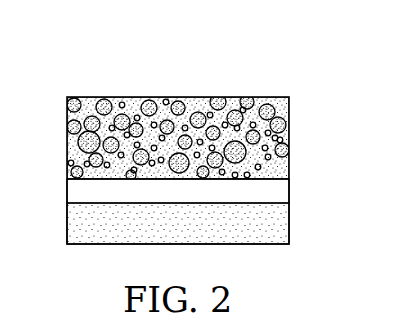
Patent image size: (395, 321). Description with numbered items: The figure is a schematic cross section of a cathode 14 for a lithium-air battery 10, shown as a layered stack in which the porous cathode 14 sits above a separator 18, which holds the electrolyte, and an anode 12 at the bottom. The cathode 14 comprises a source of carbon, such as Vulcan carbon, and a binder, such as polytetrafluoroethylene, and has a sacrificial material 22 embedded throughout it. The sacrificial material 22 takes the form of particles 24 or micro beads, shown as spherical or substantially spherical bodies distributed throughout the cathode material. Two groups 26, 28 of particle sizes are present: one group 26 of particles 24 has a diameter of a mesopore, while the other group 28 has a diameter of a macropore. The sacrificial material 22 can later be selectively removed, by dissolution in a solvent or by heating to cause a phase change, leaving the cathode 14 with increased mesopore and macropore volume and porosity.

The lithium-air battery 10 is at (87, 62).
The anode 12 is at (67, 221).
The cathode 14 is at (209, 115).
The separator 18 is at (67, 190).
The sacrificial material 22 is at (230, 97).
The particles 24 is at (284, 123).
The first group of particles 26 is at (283, 140).
The second group of particles 28 is at (272, 174).